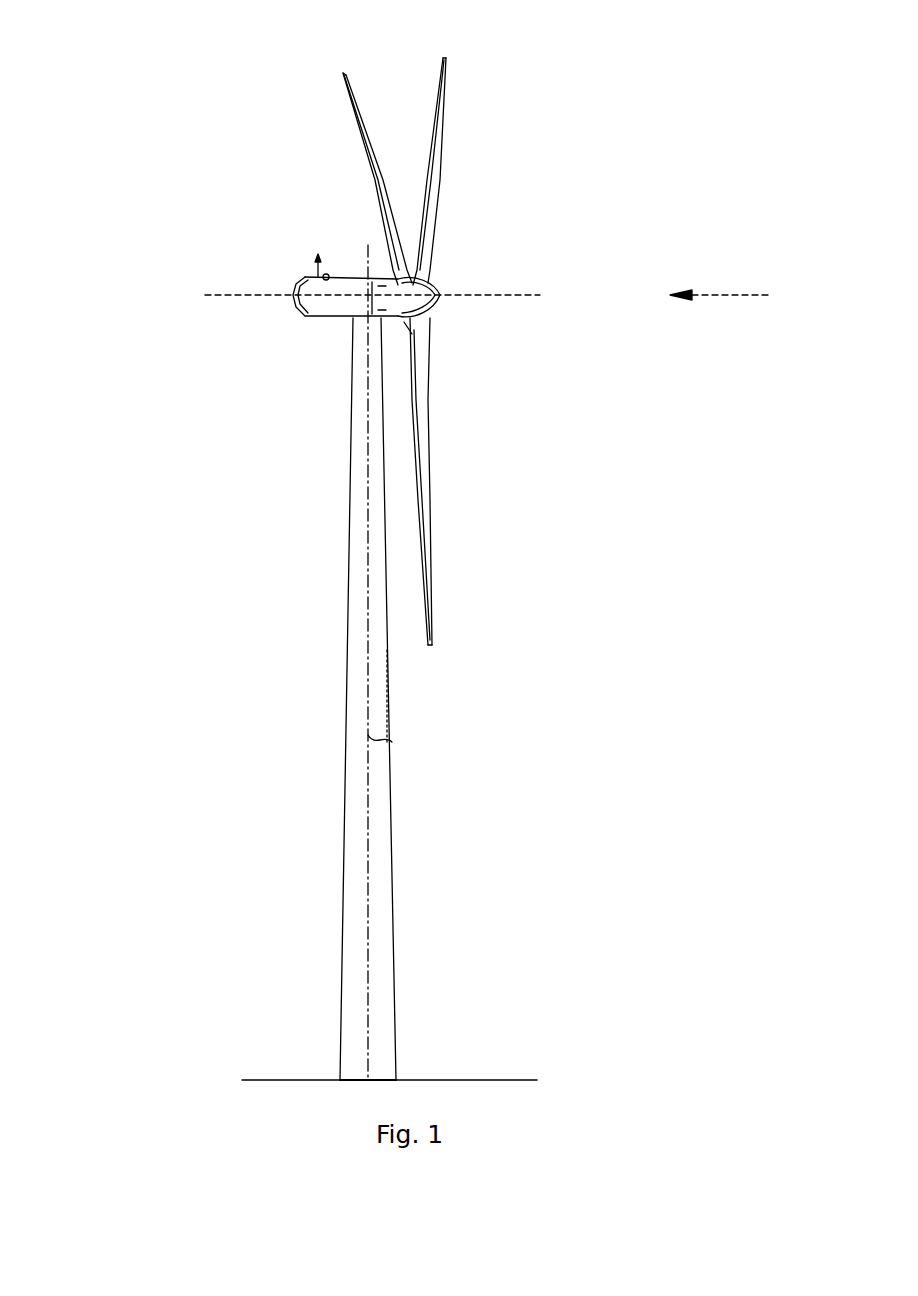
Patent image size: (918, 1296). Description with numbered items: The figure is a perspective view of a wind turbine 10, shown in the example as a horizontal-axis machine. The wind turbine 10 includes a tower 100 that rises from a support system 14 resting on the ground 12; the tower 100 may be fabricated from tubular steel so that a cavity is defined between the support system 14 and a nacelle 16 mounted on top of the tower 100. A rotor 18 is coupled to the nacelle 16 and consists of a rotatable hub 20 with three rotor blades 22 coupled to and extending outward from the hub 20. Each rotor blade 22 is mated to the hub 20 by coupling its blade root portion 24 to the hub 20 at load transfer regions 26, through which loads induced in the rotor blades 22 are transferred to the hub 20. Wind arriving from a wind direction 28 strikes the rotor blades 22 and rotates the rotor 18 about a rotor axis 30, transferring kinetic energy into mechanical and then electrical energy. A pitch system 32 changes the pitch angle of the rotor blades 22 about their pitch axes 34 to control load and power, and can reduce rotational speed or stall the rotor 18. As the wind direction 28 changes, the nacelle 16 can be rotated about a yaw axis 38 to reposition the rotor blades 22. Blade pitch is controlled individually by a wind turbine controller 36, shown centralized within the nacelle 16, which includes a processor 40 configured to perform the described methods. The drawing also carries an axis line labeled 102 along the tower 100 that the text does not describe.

The wind turbine 10 is at (128, 84).
The ground 12 is at (262, 1080).
The support system 14 is at (330, 1080).
The nacelle 16 is at (330, 318).
The rotor 18 is at (445, 198).
The rotatable hub 20 is at (437, 294).
The rotor blade 22 is at (368, 146).
The blade root portion 24 is at (430, 397).
The load transfer regions 26 is at (428, 322).
The wind direction 28 is at (740, 295).
The rotor axis 30 is at (500, 297).
The pitch system 32 is at (424, 350).
The pitch axes 34 is at (340, 78).
The wind turbine controller 36 is at (358, 348).
The yaw axis 38 is at (392, 742).
The processor 40 is at (378, 245).
The tower 100 is at (362, 670).
The tower axis 102 is at (352, 320).